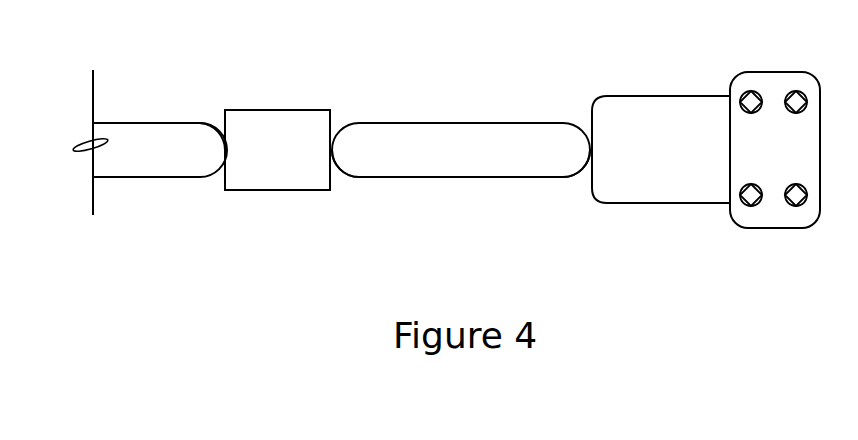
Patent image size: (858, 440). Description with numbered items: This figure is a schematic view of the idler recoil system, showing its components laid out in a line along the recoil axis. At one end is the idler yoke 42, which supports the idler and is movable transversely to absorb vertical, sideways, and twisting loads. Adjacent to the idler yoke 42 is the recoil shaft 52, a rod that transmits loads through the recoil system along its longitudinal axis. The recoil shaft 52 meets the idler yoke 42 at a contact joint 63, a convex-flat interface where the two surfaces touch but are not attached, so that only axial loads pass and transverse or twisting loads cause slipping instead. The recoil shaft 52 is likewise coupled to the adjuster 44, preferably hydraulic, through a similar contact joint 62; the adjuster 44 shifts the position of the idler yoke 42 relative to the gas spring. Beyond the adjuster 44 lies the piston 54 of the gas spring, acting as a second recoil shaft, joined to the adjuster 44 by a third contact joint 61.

The idler yoke 42 is at (616, 111).
The adjuster 44 is at (296, 121).
The recoil shaft 52 is at (500, 167).
The piston 54 is at (113, 131).
The third contact joint 61 is at (218, 126).
The contact joint 62 is at (337, 172).
The contact joint 63 is at (583, 172).